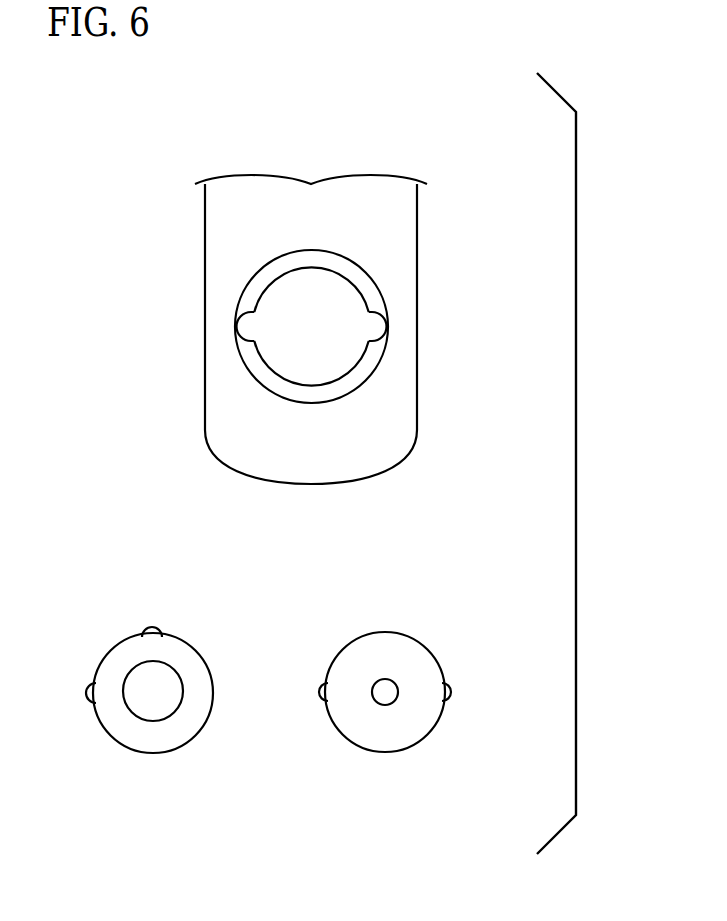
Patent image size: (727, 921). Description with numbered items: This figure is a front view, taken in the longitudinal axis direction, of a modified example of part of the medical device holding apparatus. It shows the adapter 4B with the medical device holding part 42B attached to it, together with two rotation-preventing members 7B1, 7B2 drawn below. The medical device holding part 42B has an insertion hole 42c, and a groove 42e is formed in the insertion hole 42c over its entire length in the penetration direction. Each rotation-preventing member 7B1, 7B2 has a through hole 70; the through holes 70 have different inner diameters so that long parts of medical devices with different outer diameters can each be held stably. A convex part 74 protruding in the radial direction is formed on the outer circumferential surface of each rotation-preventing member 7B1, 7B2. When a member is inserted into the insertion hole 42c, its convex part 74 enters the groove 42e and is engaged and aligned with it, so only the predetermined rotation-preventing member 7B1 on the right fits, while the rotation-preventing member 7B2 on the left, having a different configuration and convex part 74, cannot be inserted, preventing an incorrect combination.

The adapter 4B is at (226, 394).
The medical device holding part 42B is at (363, 370).
The insertion hole 42c is at (287, 270).
The groove 42e is at (387, 328).
The rotation-preventing member 7B1 is at (444, 733).
The rotation-preventing member 7B2 is at (214, 698).
The through hole 70 is at (154, 718).
The convex part 74 is at (157, 626).